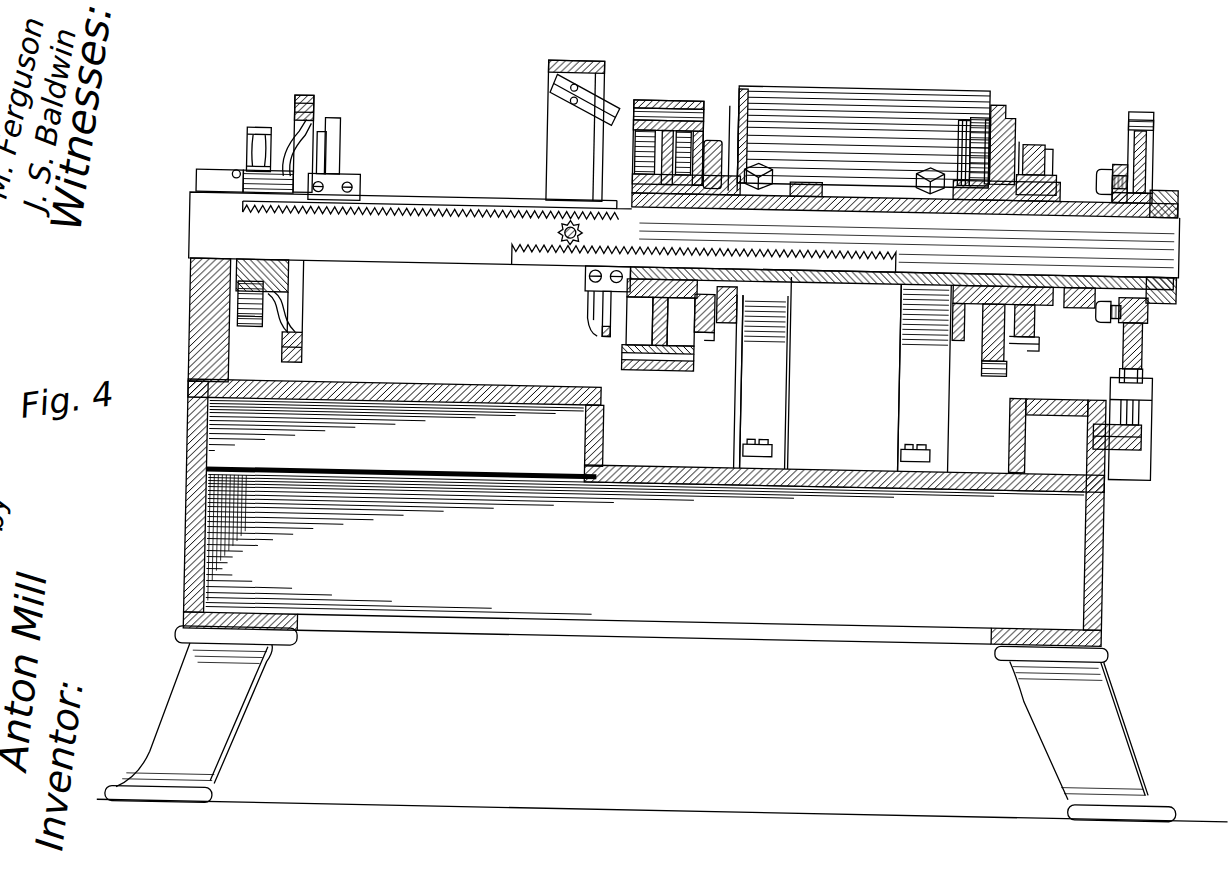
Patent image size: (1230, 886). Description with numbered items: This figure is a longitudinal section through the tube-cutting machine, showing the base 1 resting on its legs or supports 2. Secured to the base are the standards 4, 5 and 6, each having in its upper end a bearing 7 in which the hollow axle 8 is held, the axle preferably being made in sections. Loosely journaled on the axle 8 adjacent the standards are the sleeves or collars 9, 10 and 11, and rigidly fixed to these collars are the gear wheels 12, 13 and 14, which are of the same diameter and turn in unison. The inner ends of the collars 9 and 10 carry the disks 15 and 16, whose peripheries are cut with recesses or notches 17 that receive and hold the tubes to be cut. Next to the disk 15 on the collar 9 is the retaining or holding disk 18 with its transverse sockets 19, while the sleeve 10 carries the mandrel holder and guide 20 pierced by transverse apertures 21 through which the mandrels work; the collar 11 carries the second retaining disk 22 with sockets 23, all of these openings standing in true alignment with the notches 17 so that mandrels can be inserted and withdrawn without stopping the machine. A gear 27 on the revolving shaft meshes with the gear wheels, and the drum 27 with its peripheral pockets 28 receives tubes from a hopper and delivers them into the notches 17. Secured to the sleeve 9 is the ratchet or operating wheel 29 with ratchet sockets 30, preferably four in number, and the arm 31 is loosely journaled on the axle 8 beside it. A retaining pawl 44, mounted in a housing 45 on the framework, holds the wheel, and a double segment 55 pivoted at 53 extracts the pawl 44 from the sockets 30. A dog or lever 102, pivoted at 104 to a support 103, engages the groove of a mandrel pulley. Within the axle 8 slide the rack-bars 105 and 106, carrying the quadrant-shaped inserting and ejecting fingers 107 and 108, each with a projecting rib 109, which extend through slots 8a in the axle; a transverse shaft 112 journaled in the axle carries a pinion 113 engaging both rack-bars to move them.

The base 1 is at (847, 287).
The legs or supports 2 is at (210, 715).
The standard 4 is at (777, 406).
The standard 5 is at (919, 396).
The standard 6 is at (210, 330).
The bearing 7 is at (197, 185).
The hollow axle 8 is at (189, 236).
The slots 8a is at (468, 192).
The sleeve or collar 9 is at (1078, 174).
The sleeve or collar 10 is at (712, 129).
The sleeve or collar 11 is at (236, 169).
The gear wheel 12 is at (1029, 133).
The gear wheel 13 is at (730, 139).
The gear wheel 14 is at (249, 126).
The disk 15 is at (980, 109).
The disk 16 is at (747, 114).
The recesses or notches 17 is at (755, 154).
The retaining or holding disk 18 is at (1015, 123).
The sockets or cavities 19 is at (1010, 102).
The mandrel holder and guide 20 is at (641, 94).
The transverse apertures 21 is at (663, 111).
The second retaining or holding disk 22 is at (311, 163).
The sockets or cavities 23 is at (299, 170).
The drum 27 is at (988, 109).
The pockets or receptacles 28 is at (861, 95).
The ratchet or operating wheel 29 is at (1149, 151).
The ratchet sockets 30 is at (1140, 99).
The arm 31 is at (1165, 172).
The retaining pawl 44 is at (1134, 366).
The housing 45 is at (1146, 384).
The pivot 53 is at (1133, 421).
The double segment 55 is at (1147, 401).
The dog or lever 102 is at (596, 84).
The support 103 is at (560, 53).
The pivot 104 is at (565, 90).
The rack-bar 105 is at (392, 201).
The rack-bar 106 is at (586, 247).
The inserting and ejecting finger 107 is at (344, 159).
The inserting and ejecting finger 108 is at (594, 292).
The projecting rib 109 is at (349, 127).
The transverse shaft 112 is at (559, 226).
The pinion 113 is at (584, 222).